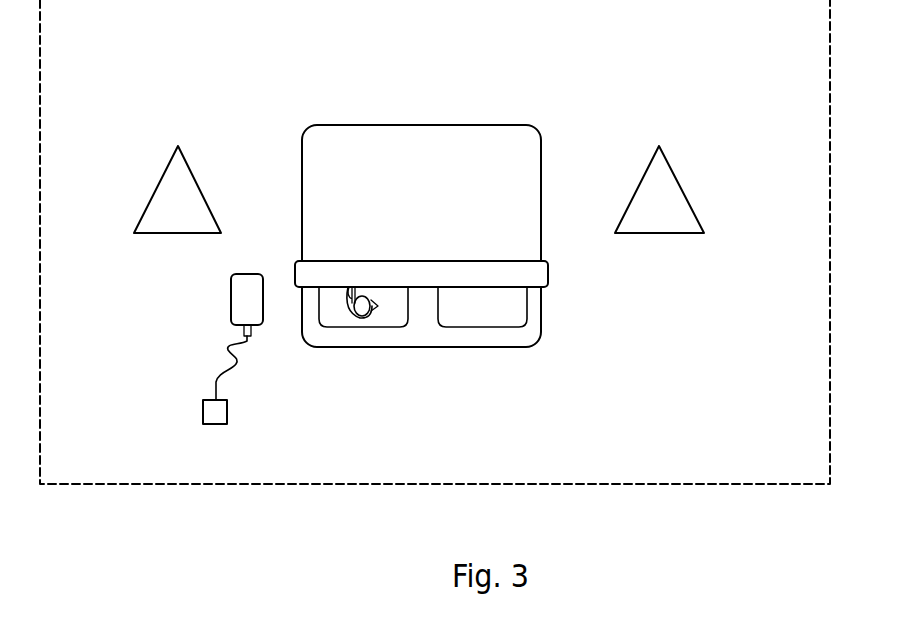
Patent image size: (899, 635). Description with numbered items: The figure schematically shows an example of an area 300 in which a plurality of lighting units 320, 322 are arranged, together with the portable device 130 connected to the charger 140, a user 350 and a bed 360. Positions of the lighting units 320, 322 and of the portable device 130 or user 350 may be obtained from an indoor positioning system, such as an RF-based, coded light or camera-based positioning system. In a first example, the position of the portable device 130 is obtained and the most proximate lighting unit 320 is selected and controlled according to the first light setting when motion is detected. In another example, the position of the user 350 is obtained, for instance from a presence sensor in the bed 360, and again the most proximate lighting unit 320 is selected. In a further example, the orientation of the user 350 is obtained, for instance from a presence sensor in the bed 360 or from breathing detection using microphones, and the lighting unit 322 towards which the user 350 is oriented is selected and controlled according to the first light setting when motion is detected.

The area 300 is at (781, 446).
The lighting unit 320 is at (187, 188).
The lighting unit 322 is at (673, 188).
The portable device 130 is at (243, 303).
The charger 140 is at (203, 412).
The user 350 is at (366, 318).
The bed 360 is at (483, 340).